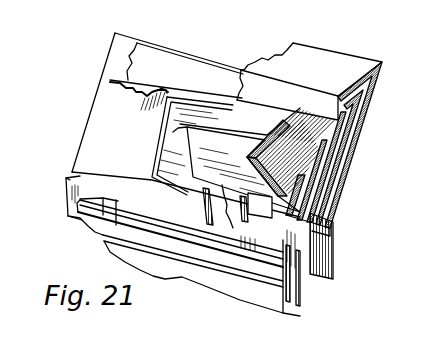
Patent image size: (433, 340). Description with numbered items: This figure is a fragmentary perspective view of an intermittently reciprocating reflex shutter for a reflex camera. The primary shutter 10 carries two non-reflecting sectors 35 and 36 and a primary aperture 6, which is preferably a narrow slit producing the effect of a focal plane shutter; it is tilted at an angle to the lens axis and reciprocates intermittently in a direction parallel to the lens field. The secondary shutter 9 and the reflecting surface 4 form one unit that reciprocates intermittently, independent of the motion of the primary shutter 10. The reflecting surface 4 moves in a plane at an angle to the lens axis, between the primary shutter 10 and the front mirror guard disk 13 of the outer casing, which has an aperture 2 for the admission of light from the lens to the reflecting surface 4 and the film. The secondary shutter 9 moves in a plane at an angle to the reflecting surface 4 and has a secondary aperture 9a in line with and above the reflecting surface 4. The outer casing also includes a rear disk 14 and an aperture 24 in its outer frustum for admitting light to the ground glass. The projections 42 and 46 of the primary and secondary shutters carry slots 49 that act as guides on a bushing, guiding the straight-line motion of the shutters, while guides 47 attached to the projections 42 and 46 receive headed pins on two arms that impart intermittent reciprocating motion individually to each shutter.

The aperture 2 is at (236, 163).
The reflecting surface 4 is at (192, 146).
The primary aperture 6 is at (224, 228).
The secondary shutter 9 is at (110, 82).
The secondary aperture 9a is at (158, 92).
The primary shutter 10 is at (347, 181).
The front mirror guard disk 13 is at (317, 228).
The rear disk 14 is at (338, 207).
The aperture 24 is at (309, 93).
The non-reflecting sector 35 is at (157, 102).
The non-reflecting sector 36 is at (357, 163).
The projection 42 is at (197, 276).
The projection 46 is at (72, 190).
The guides 47 is at (82, 222).
The slots 49 is at (113, 225).